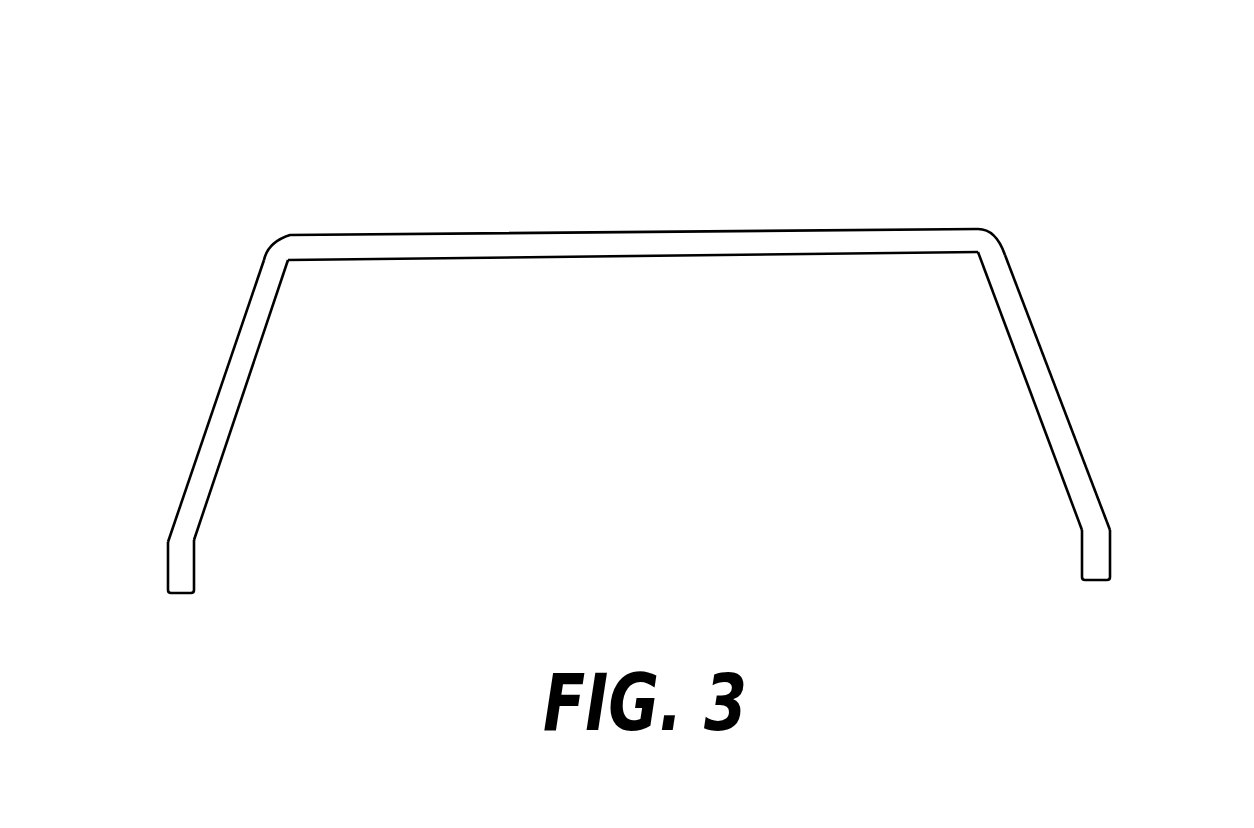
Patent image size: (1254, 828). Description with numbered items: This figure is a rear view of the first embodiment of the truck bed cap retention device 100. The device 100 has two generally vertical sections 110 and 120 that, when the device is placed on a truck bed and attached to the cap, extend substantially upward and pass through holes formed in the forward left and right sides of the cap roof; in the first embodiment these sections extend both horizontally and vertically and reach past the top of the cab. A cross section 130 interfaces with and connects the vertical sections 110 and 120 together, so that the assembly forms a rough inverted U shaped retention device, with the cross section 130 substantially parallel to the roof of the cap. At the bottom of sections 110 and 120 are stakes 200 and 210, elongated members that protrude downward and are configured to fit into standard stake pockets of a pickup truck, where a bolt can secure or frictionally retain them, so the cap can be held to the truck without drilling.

The device 100 is at (786, 140).
The vertical section 110 is at (147, 238).
The vertical section 120 is at (1126, 228).
The cross section 130 is at (1000, 222).
The stake 200 is at (194, 569).
The stake 210 is at (1082, 565).